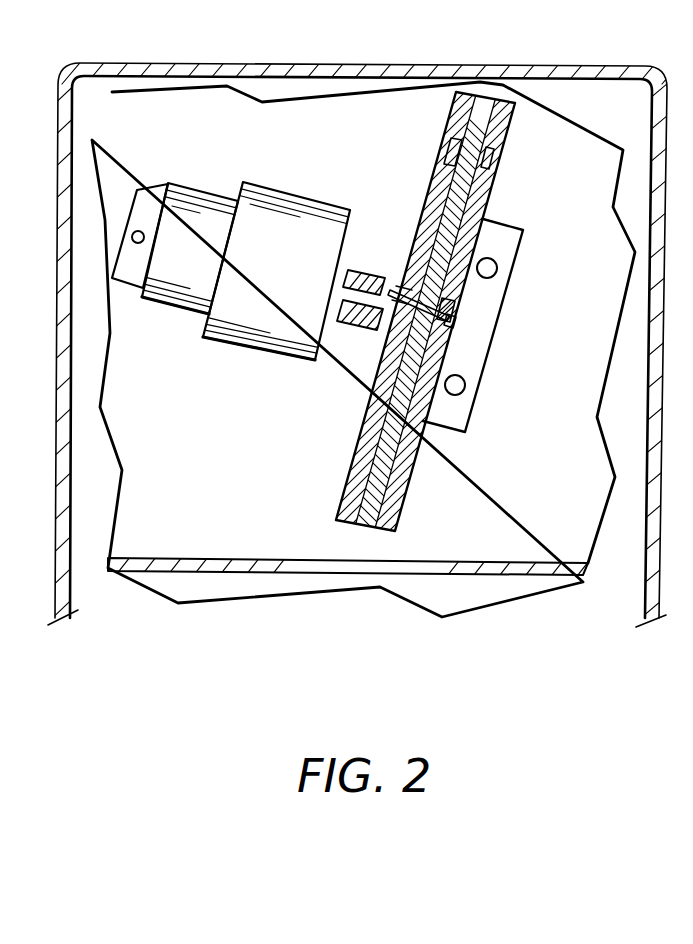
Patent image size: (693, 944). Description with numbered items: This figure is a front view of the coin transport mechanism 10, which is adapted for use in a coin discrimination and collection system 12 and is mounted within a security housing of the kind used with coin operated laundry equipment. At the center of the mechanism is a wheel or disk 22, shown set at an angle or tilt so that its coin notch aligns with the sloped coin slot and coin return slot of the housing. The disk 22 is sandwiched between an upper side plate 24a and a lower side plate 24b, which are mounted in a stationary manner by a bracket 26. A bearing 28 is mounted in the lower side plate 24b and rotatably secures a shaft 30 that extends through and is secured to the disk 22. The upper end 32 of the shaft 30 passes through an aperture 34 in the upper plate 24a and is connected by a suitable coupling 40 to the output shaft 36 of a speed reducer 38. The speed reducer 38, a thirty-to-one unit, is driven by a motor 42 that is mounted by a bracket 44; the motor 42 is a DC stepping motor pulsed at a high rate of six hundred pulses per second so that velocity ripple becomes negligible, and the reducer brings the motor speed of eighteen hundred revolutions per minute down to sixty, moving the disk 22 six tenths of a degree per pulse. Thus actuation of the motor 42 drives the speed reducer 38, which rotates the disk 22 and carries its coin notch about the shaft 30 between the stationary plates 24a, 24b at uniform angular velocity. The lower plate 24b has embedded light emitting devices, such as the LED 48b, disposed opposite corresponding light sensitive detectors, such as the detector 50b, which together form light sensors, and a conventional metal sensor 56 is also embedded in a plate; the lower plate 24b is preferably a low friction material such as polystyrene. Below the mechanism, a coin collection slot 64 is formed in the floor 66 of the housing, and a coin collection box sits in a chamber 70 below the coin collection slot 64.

The coin transport mechanism 10 is at (346, 377).
The coin discrimination and collection system 12 is at (662, 362).
The wheel or disk 22 is at (346, 310).
The upper side plate 24a is at (350, 472).
The lower side plate 24b is at (407, 489).
The bracket 26 is at (518, 267).
The bearing 28 is at (463, 306).
The shaft 30 is at (453, 323).
The upper end of shaft 32 is at (388, 314).
The aperture 34 is at (400, 284).
The output shaft 36 is at (358, 330).
The speed reducer 38 is at (247, 352).
The coupling 40 is at (367, 272).
The motor 42 is at (203, 187).
The bracket 44 is at (153, 190).
The light emitting device 48b is at (505, 167).
The detector 50b is at (450, 143).
The metal sensor 56 is at (488, 205).
The coin collection slot 64 is at (418, 560).
The floor 66 is at (227, 558).
The chamber 70 is at (368, 641).